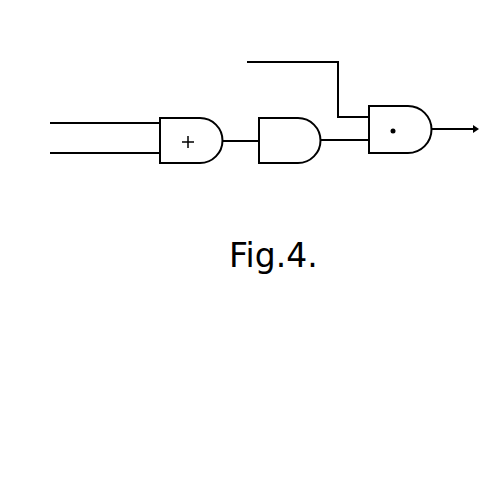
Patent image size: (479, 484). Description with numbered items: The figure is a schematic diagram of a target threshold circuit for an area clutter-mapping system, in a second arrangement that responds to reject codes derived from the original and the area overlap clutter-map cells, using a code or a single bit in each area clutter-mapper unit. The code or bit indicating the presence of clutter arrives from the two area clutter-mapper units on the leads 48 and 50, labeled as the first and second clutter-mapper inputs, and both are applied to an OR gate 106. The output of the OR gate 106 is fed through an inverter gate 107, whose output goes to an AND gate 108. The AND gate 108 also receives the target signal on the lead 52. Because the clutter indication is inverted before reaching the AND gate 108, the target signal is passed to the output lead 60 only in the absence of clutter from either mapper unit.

The lead 48 is at (147, 122).
The lead 50 is at (95, 155).
The lead 52 is at (340, 76).
The output lead 60 is at (453, 133).
The OR gate 106 is at (192, 163).
The inverter gate 107 is at (298, 157).
The AND gate 108 is at (418, 120).